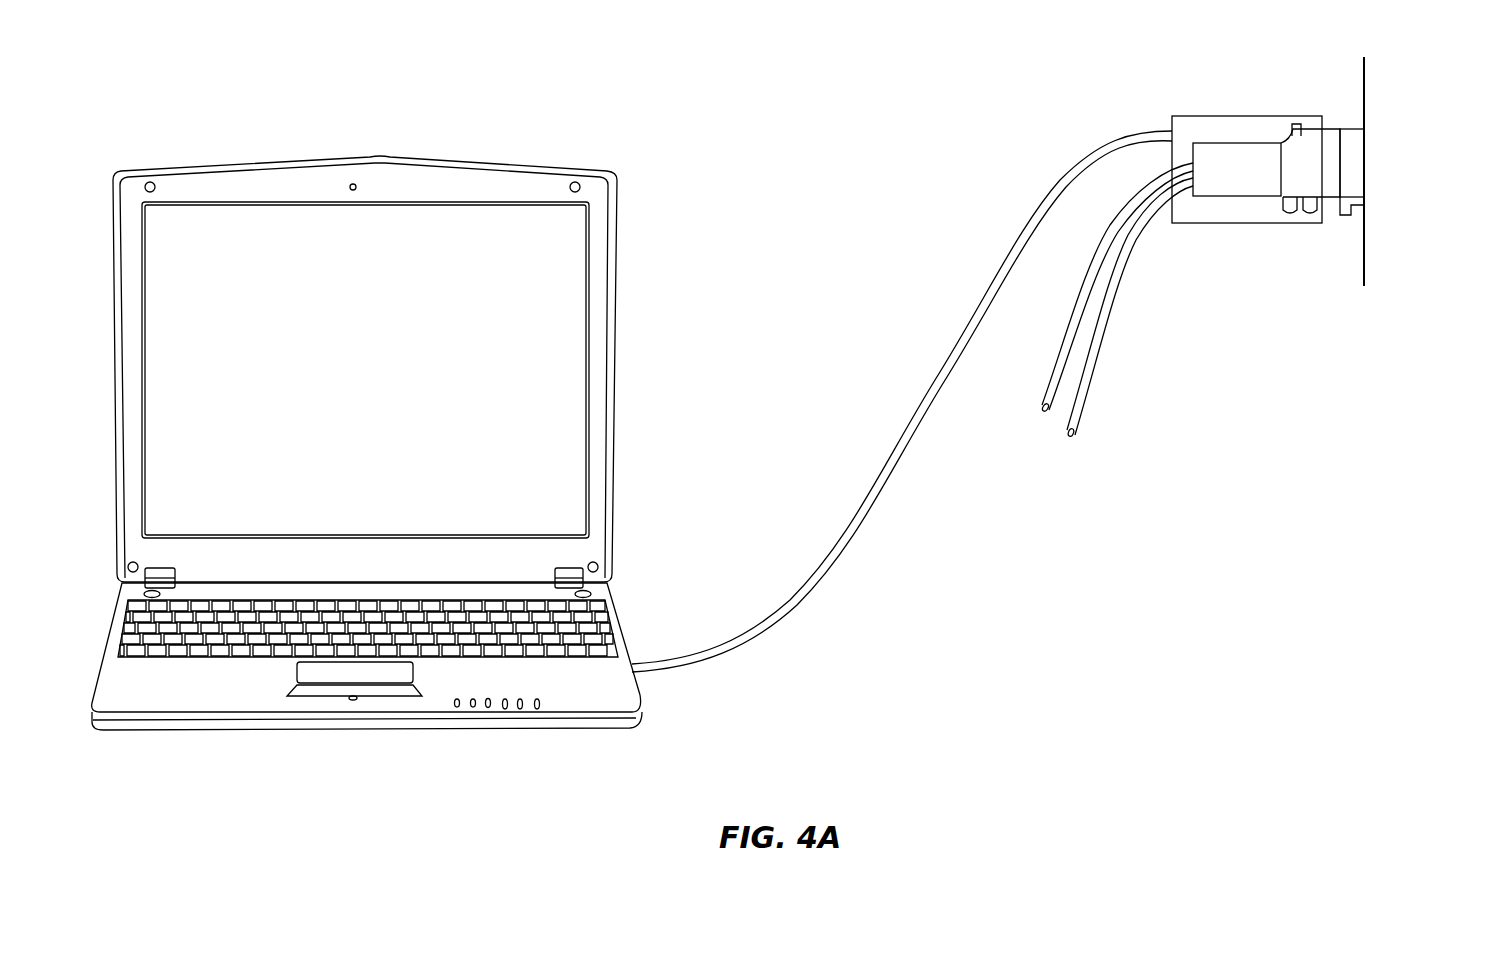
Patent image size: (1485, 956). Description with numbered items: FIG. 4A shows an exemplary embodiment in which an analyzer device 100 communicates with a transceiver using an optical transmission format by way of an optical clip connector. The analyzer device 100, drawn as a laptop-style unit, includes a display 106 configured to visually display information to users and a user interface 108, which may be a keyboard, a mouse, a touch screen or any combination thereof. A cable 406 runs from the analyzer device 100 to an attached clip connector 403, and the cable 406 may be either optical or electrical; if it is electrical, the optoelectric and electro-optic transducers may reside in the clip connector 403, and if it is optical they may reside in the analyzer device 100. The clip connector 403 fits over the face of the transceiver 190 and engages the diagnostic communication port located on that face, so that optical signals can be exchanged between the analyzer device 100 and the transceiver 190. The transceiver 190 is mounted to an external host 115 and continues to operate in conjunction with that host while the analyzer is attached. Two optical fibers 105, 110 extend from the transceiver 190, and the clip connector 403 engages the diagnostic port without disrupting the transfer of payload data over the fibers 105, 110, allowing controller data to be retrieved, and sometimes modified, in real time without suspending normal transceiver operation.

The analyzer device 100 is at (375, 745).
The display 106 is at (365, 370).
The user interface 108 is at (480, 598).
The cable 406 is at (930, 308).
The clip connector 403 is at (1194, 105).
The transceiver module 190 is at (1356, 213).
The external host 115 is at (1404, 171).
The optical fiber 105 is at (1117, 394).
The optical fiber 110 is at (1130, 307).